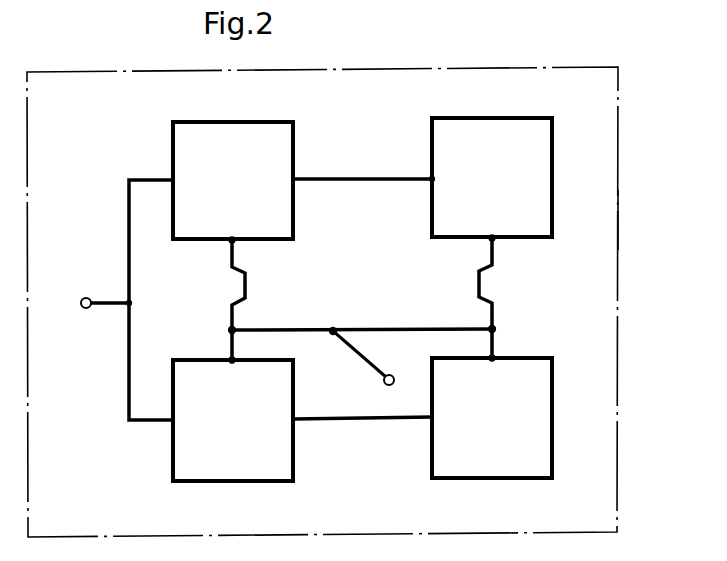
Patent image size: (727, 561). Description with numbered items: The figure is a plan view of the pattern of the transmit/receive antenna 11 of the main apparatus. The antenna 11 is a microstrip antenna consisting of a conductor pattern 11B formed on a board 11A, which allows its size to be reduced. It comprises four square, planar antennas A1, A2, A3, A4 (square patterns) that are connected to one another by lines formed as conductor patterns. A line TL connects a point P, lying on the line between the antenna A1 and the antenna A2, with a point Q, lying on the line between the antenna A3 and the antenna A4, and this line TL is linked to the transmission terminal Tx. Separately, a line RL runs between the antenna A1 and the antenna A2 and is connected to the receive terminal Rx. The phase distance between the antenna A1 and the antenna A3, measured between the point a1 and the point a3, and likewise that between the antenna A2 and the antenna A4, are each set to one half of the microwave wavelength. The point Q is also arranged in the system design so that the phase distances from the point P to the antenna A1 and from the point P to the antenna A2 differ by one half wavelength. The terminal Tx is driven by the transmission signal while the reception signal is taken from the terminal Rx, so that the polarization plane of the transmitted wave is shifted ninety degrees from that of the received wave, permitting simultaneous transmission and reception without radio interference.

The antenna 11 is at (627, 87).
The board 11A is at (618, 222).
The conductor pattern 11B is at (533, 238).
The square antenna A1 is at (293, 135).
The square antenna A2 is at (293, 380).
The square antenna A3 is at (552, 130).
The square antenna A4 is at (552, 372).
The point a1 is at (293, 173).
The point a3 is at (432, 182).
The receive terminal Rx is at (96, 315).
The line RL is at (129, 338).
The line TL is at (427, 327).
The transmission terminal Tx is at (362, 368).
The point P is at (229, 300).
The point Q is at (496, 298).